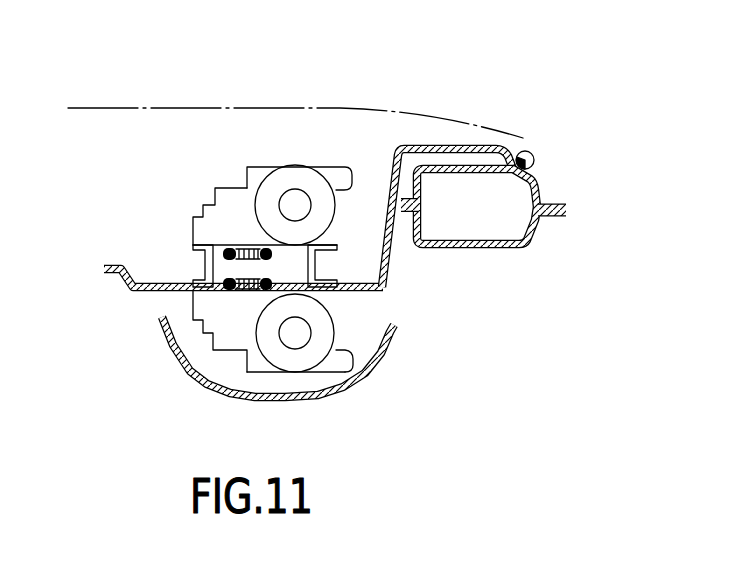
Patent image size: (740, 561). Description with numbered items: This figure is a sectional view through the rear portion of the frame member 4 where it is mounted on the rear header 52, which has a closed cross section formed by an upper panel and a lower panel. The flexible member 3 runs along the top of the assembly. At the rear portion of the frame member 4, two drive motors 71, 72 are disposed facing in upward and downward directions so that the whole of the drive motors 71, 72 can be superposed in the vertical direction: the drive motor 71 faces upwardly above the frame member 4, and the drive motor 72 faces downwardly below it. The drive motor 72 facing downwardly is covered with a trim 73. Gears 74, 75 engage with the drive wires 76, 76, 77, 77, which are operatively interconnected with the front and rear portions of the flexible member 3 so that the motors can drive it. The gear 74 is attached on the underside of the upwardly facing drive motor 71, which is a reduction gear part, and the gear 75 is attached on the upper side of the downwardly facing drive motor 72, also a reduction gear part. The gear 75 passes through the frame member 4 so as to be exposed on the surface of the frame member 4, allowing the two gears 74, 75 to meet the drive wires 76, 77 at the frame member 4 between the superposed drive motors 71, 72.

The flexible member 3 is at (257, 108).
The frame member 4 is at (122, 291).
The rear header 52 is at (527, 242).
The drive motor 71 is at (301, 165).
The drive motor 72 is at (355, 352).
The trim 73 is at (353, 398).
The gear 74 is at (245, 244).
The gear 75 is at (235, 295).
The drive wires 76 is at (223, 251).
The drive wires 77 is at (217, 300).